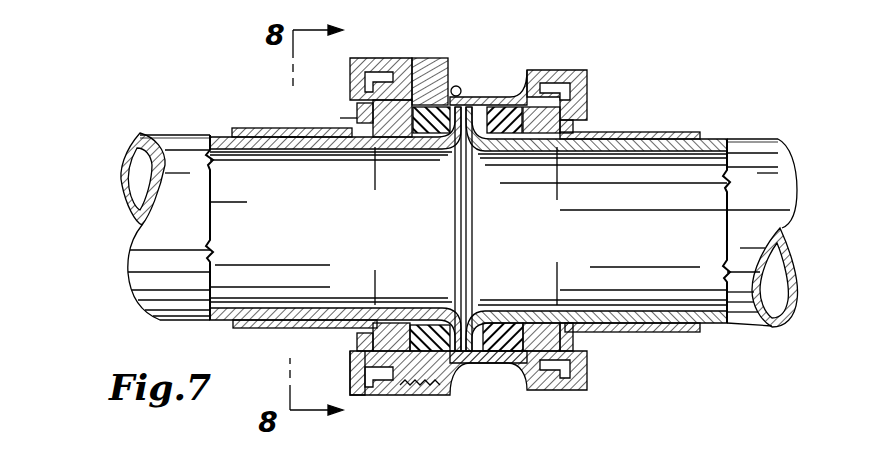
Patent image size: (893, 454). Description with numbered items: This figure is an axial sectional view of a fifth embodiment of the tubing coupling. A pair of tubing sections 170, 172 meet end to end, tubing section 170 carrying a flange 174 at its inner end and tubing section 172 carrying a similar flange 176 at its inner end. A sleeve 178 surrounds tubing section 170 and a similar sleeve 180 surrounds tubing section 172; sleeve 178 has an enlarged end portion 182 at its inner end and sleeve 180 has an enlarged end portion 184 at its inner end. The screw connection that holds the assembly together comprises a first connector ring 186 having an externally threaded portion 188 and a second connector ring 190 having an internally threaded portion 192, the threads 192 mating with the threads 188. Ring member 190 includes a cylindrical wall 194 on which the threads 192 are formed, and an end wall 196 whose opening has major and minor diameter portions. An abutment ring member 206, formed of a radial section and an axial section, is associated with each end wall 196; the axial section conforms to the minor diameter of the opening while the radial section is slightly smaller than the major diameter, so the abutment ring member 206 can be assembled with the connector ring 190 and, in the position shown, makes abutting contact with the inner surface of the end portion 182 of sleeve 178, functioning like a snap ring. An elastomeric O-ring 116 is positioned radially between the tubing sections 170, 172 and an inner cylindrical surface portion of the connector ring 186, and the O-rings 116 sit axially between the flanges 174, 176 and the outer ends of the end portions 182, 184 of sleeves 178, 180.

The elastomeric O-ring 116 is at (430, 133).
The tubing section 170 is at (320, 150).
The tubing section 172 is at (628, 148).
The flange 174 is at (433, 150).
The flange 176 is at (483, 95).
The sleeve 178 is at (253, 127).
The sleeve 180 is at (655, 131).
The enlarged end portion 182 is at (408, 100).
The enlarged end portion 184 is at (553, 110).
The first connector ring 186 is at (587, 73).
The externally threaded portion 188 is at (428, 77).
The second connector ring 190 is at (392, 58).
The internally threaded portion 192 is at (398, 128).
The cylindrical wall 194 is at (413, 397).
The end wall 196 is at (350, 380).
The abutment ring member 206 is at (293, 138).